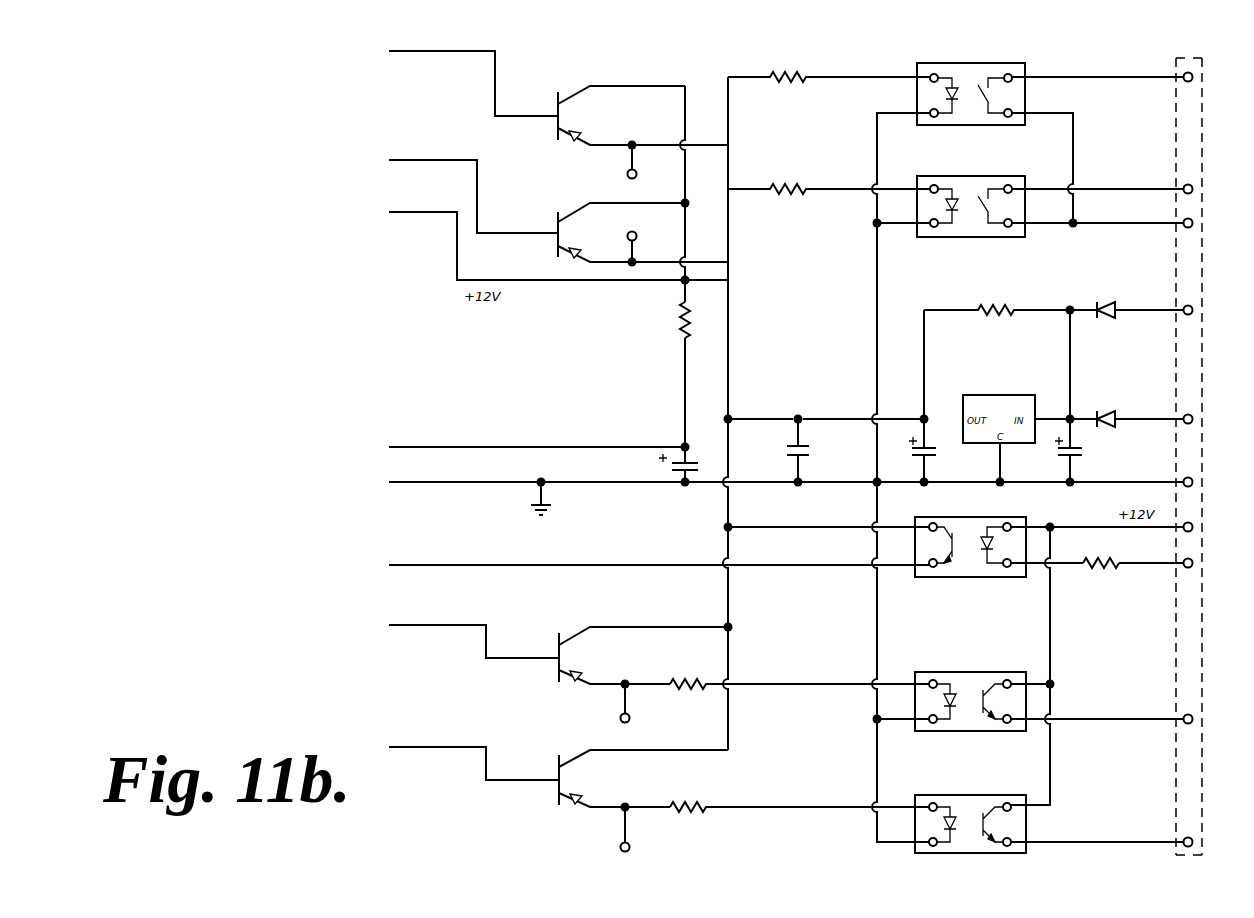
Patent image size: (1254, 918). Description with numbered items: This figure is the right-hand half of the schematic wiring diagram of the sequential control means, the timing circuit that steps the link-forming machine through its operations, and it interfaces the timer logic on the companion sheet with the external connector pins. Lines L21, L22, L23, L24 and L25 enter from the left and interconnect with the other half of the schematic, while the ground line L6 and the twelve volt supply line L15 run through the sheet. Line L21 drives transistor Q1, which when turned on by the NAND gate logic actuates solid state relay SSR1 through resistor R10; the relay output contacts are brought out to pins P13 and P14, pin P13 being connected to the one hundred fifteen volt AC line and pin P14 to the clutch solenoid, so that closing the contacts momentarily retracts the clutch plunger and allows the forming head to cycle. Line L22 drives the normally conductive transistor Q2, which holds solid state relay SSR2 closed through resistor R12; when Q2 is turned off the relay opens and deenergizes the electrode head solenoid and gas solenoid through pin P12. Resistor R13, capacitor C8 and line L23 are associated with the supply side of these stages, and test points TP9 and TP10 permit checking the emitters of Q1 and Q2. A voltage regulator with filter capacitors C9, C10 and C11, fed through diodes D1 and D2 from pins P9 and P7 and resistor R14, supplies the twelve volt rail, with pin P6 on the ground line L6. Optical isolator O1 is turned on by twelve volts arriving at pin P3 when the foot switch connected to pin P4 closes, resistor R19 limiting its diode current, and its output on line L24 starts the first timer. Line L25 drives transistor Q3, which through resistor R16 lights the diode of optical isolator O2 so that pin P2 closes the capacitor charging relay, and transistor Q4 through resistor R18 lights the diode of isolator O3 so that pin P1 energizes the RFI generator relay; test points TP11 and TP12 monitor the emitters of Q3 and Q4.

The line L21 is at (392, 55).
The line L22 is at (396, 160).
The twelve volt supply line L15 is at (392, 216).
The line L23 is at (412, 447).
The ground line L6 is at (412, 482).
The line L24 is at (390, 565).
The line L25 is at (400, 625).
The transistor Q1 is at (622, 115).
The transistor Q2 is at (622, 232).
The transistor Q3 is at (623, 655).
The transistor Q4 is at (623, 778).
The test point TP9 is at (626, 170).
The test point TP10 is at (620, 239).
The test point TP11 is at (624, 712).
The test point TP12 is at (598, 829).
The resistor R10 is at (831, 86).
The resistor R12 is at (831, 198).
The resistor R13 is at (661, 320).
The resistor R14 is at (997, 300).
The resistor R16 is at (801, 692).
The resistor R18 is at (801, 815).
The resistor R19 is at (1101, 572).
The capacitor C8 is at (659, 466).
The capacitor C9 is at (813, 450).
The capacitor C10 is at (939, 451).
The capacitor C11 is at (1085, 449).
The diode D1 is at (1129, 299).
The diode D2 is at (1129, 408).
The solid state relay SSR1 is at (971, 85).
The solid state relay SSR2 is at (971, 198).
The optical isolator O1 is at (995, 517).
The optical isolator O2 is at (983, 672).
The optical isolator O3 is at (985, 795).
The pin P1 is at (1206, 843).
The pin P2 is at (1206, 721).
The pin P3 is at (1206, 529).
The pin P4 is at (1206, 565).
The pin P6 is at (1206, 484).
The pin P7 is at (1206, 420).
The pin P9 is at (1206, 312).
The pin P12 is at (1210, 190).
The pin P13 is at (1210, 225).
The pin P14 is at (1210, 78).